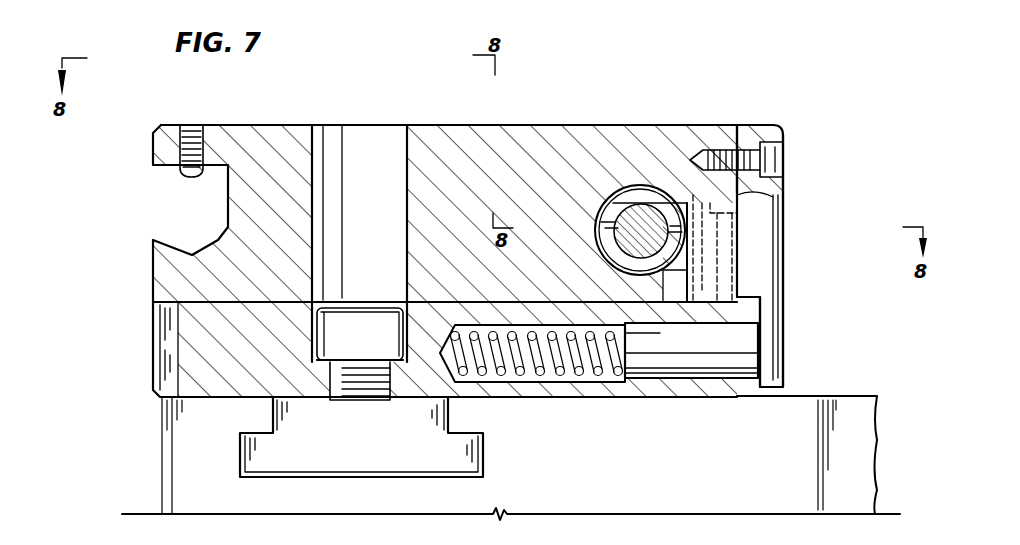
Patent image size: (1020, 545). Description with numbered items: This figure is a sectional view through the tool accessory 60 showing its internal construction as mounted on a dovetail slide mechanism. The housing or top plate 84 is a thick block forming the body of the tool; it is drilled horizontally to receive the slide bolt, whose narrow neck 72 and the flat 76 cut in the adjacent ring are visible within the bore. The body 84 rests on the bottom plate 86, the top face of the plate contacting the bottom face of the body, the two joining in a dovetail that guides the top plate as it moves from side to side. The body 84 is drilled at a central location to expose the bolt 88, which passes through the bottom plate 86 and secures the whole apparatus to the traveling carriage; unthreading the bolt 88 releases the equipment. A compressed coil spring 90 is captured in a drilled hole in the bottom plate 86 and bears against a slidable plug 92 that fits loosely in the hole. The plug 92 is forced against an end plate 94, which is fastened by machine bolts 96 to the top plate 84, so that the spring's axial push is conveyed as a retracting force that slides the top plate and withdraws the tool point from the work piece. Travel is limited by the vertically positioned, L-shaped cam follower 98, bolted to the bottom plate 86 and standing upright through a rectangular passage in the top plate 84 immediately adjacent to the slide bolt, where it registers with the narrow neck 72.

The clamping fixture assembly 60 is at (626, 86).
The narrow neck 72 is at (597, 200).
The flat 76 is at (617, 218).
The housing 84 is at (447, 140).
The plate 86 is at (195, 370).
The bolt 88 is at (360, 322).
The compressed coil spring 90 is at (582, 372).
The slidable plug 92 is at (698, 360).
The end plate 94 is at (763, 266).
The machine bolts 96 is at (777, 155).
The L-shaped cam follower 98 is at (707, 233).